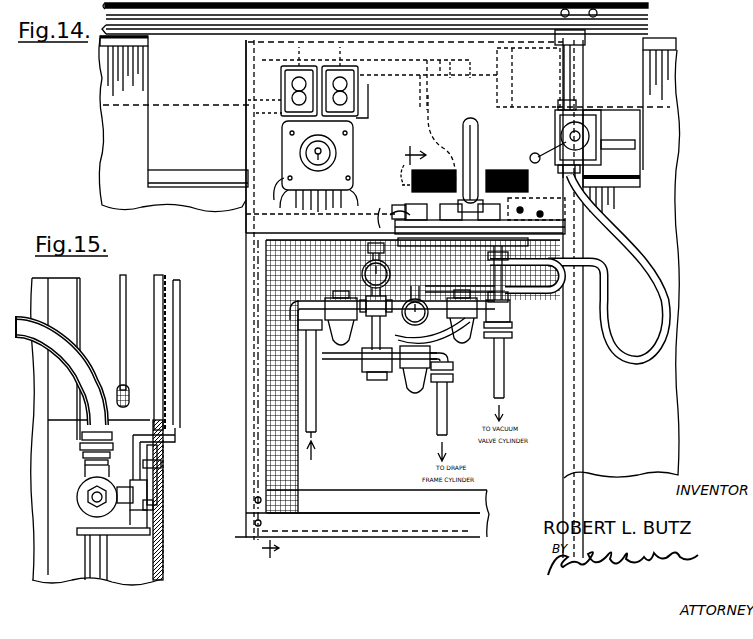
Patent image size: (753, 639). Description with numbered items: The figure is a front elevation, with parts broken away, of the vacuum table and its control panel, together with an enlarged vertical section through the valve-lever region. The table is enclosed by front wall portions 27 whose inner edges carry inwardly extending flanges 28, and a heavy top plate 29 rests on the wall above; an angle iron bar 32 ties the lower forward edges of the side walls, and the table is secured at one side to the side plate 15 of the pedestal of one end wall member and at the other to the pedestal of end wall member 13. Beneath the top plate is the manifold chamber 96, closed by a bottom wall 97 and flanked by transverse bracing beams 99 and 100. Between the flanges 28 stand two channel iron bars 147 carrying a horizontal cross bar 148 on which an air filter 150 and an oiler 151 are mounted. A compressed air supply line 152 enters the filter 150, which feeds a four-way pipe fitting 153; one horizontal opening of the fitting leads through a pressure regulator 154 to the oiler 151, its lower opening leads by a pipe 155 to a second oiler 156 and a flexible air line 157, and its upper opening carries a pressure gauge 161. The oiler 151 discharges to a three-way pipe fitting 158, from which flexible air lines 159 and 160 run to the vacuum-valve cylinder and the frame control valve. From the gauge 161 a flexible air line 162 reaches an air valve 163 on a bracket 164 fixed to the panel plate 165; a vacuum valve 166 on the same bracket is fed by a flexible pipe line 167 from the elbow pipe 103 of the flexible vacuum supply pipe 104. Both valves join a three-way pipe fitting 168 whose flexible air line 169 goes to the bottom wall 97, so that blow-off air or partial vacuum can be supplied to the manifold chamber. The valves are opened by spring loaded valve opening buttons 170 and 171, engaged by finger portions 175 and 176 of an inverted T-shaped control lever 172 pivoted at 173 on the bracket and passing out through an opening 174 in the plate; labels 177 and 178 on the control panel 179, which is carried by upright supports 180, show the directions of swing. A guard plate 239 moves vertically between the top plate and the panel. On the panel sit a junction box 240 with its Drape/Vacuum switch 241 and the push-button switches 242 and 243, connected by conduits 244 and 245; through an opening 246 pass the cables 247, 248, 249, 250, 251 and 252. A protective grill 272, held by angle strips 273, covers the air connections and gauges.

In FIG. 14, the end wall member 13 is at (269, 558).
In FIG. 14, the side plate 15 is at (414, 147).
In FIG. 14, the front wall portion 27 is at (101, 158).
In FIG. 14, the inwardly extending flange 28 is at (246, 338).
In FIG. 15, the inwardly extending flange 28 is at (68, 290).
In FIG. 14, the top plate 29 is at (676, 43).
In FIG. 14, the angle iron bar 32 is at (482, 543).
In FIG. 14, the manifold chamber 96 is at (478, 77).
In FIG. 14, the bottom wall 97 is at (455, 77).
In FIG. 14, the transverse bracing beam 99 is at (345, 57).
In FIG. 14, the transverse bracing beam 100 is at (506, 62).
In FIG. 14, the elbow pipe 103 is at (445, 340).
In FIG. 14, the flexible vacuum supply pipe 104 is at (322, 360).
In FIG. 14, the channel iron bar 147 is at (248, 236).
In FIG. 15, the channel iron bar 147 is at (137, 575).
In FIG. 14, the horizontal cross bar 148 is at (515, 322).
In FIG. 14, the air filter 150 is at (340, 300).
In FIG. 14, the oiler 151 is at (450, 368).
In FIG. 14, the compressed air supply line 152 is at (316, 431).
In FIG. 14, the four-way pipe fitting 153 is at (372, 325).
In FIG. 14, the pressure regulator 154 is at (466, 288).
In FIG. 14, the pipe 155 is at (376, 372).
In FIG. 14, the oiler 156 is at (413, 390).
In FIG. 14, the flexible air line 157 is at (447, 412).
In FIG. 14, the three-way pipe fitting 158 is at (503, 311).
In FIG. 14, the flexible air line 159 is at (504, 376).
In FIG. 14, the flexible air line 160 is at (662, 295).
In FIG. 14, the pressure gauge 161 is at (366, 273).
In FIG. 14, the flexible air line 162 is at (392, 229).
In FIG. 15, the flexible air line 162 is at (92, 503).
In FIG. 14, the air valve 163 is at (398, 206).
In FIG. 15, the air valve 163 is at (80, 492).
In FIG. 14, the bracket 164 is at (396, 180).
In FIG. 15, the bracket 164 is at (160, 530).
In FIG. 14, the panel plate 165 is at (552, 200).
In FIG. 15, the panel plate 165 is at (160, 490).
In FIG. 14, the vacuum valve 166 is at (485, 206).
In FIG. 14, the flexible pipe line 167 is at (550, 276).
In FIG. 15, the flexible pipe line 167 is at (90, 574).
In FIG. 14, the three-way pipe fitting 168 is at (480, 241).
In FIG. 15, the three-way pipe fitting 168 is at (84, 448).
In FIG. 14, the flexible air line 169 is at (430, 112).
In FIG. 15, the flexible air line 169 is at (86, 362).
In FIG. 14, the spring loaded valve opening button 170 is at (430, 206).
In FIG. 15, the spring loaded valve opening button 170 is at (163, 508).
In FIG. 14, the spring loaded valve opening button 171 is at (515, 210).
In FIG. 14, the control lever 172 is at (478, 135).
In FIG. 15, the control lever 172 is at (180, 402).
In FIG. 14, the pivot 173 is at (487, 170).
In FIG. 15, the pivot 173 is at (146, 449).
In FIG. 14, the opening 174 is at (434, 172).
In FIG. 15, the opening 174 is at (162, 452).
In FIG. 14, the finger portion 175 is at (380, 218).
In FIG. 15, the finger portion 175 is at (142, 527).
In FIG. 14, the finger portion 176 is at (538, 209).
In FIG. 14, the label 177 is at (515, 165).
In FIG. 14, the label 178 is at (406, 165).
In FIG. 14, the control panel 179 is at (250, 99).
In FIG. 15, the control panel 179 is at (166, 326).
In FIG. 14, the upright support 180 is at (584, 72).
In FIG. 15, the upright support 180 is at (158, 322).
In FIG. 14, the guard plate 239 is at (150, 155).
In FIG. 15, the guard plate 239 is at (120, 308).
In FIG. 14, the junction box 240 is at (352, 152).
In FIG. 14, the switch 241 is at (315, 152).
In FIG. 14, the push-button switch 242 is at (312, 66).
In FIG. 14, the push-button switch 243 is at (358, 88).
In FIG. 14, the conduit 244 is at (258, 113).
In FIG. 14, the conduit 245 is at (369, 117).
In FIG. 14, the opening 246 is at (275, 202).
In FIG. 14, the 2-wire cable 247 is at (278, 192).
In FIG. 14, the 2-wire cable 248 is at (279, 207).
In FIG. 14, the 3-wire cable 249 is at (294, 212).
In FIG. 14, the 2-wire cable 250 is at (318, 207).
In FIG. 14, the 3-wire cable 251 is at (338, 206).
In FIG. 14, the 3-wire cable 252 is at (357, 199).
In FIG. 14, the protective grill 272 is at (280, 472).
In FIG. 15, the protective grill 272 is at (166, 562).
In FIG. 14, the angle strip 273 is at (292, 494).